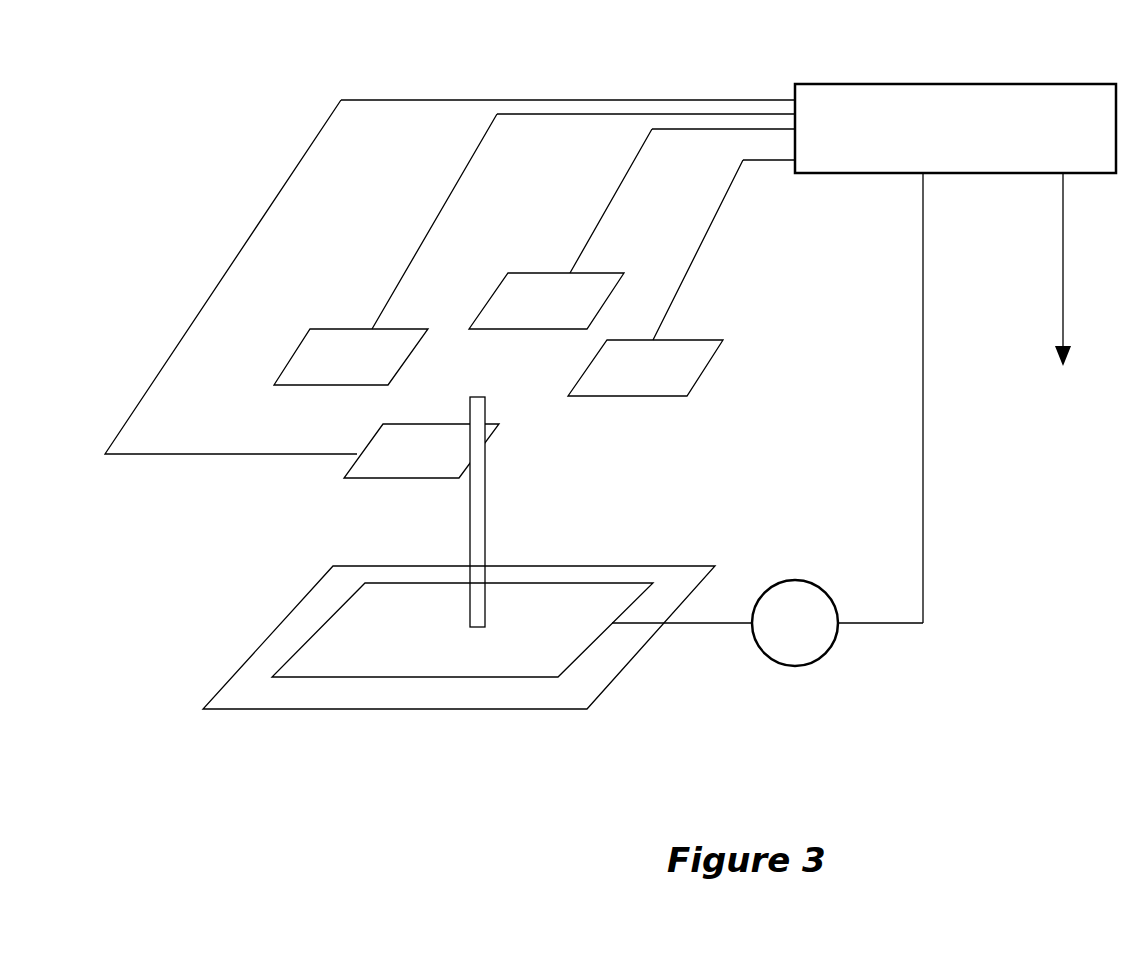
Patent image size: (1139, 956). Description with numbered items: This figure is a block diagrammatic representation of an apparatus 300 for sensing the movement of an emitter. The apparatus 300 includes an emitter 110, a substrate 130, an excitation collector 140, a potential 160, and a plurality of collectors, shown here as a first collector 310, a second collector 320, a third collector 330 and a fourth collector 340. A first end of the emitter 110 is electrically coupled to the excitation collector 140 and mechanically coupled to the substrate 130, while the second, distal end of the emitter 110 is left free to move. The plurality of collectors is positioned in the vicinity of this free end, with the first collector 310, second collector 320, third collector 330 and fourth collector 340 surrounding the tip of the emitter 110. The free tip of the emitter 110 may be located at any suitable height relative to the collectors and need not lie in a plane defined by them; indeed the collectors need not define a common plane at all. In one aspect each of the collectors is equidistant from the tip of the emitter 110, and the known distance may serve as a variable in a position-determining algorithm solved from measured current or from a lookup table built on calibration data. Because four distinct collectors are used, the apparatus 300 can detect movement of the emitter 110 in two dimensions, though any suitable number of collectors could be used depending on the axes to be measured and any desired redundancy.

The apparatus 300 is at (131, 134).
The first collector 310 is at (546, 301).
The second collector 320 is at (645, 368).
The third collector 330 is at (421, 451).
The fourth collector 340 is at (351, 357).
The emitter 110 is at (438, 520).
The substrate 130 is at (345, 724).
The excitation collector 140 is at (462, 677).
The potential 160 is at (767, 623).